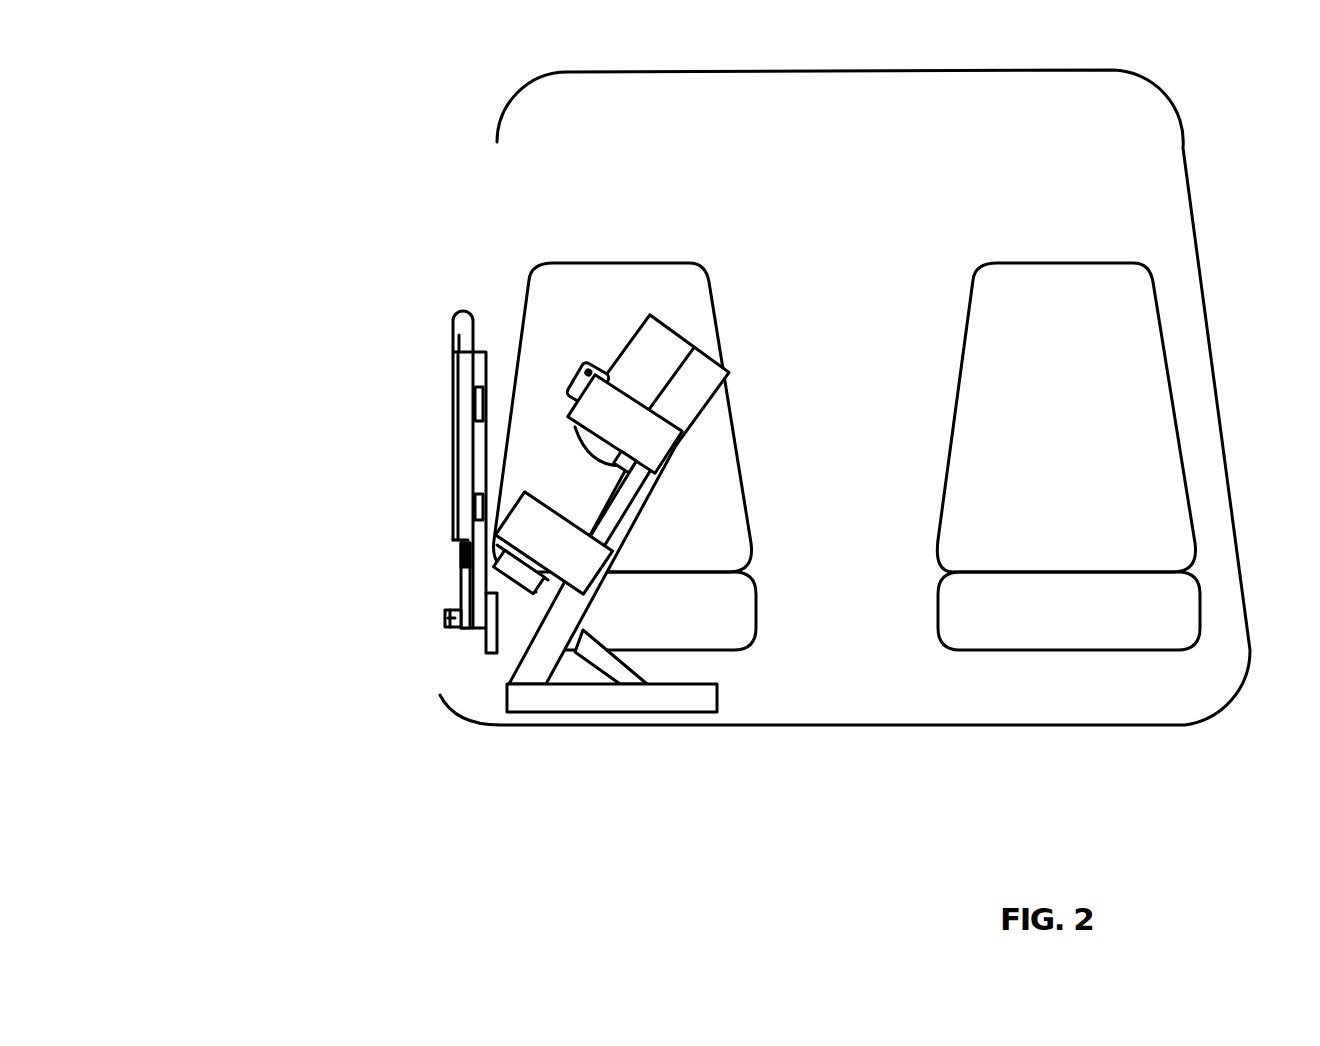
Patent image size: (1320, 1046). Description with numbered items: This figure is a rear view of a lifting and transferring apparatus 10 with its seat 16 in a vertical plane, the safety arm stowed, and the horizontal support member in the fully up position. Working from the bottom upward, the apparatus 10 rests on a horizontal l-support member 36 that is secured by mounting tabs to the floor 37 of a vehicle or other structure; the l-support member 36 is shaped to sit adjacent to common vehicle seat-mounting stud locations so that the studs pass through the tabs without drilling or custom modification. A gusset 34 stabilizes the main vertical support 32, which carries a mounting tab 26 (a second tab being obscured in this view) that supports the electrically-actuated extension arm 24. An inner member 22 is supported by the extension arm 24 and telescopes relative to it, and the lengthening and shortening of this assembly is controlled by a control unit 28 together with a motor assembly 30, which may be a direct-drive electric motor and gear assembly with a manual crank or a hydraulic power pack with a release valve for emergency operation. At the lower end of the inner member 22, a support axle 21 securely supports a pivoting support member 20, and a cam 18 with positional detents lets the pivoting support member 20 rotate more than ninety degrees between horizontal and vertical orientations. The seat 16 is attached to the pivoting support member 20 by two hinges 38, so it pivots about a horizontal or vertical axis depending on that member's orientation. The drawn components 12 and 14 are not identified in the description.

The lifting and transferring apparatus 10 is at (333, 285).
The end cap 12 is at (460, 335).
The housing 14 is at (452, 356).
The seat 16 is at (462, 542).
The cam 18 is at (450, 600).
The pivoting support member 20 is at (460, 645).
The support axle 21 is at (448, 622).
The inner member 22 is at (513, 598).
The electrically-actuated extension arm 24 is at (568, 468).
The mounting tab 26 is at (547, 530).
The control unit 28 is at (583, 352).
The motor assembly 30 is at (697, 357).
The main vertical support 32 is at (627, 527).
The gusset 34 is at (612, 660).
The horizontal l-support member 36 is at (543, 702).
The floor 37 is at (680, 728).
The hinges 38 is at (478, 405).